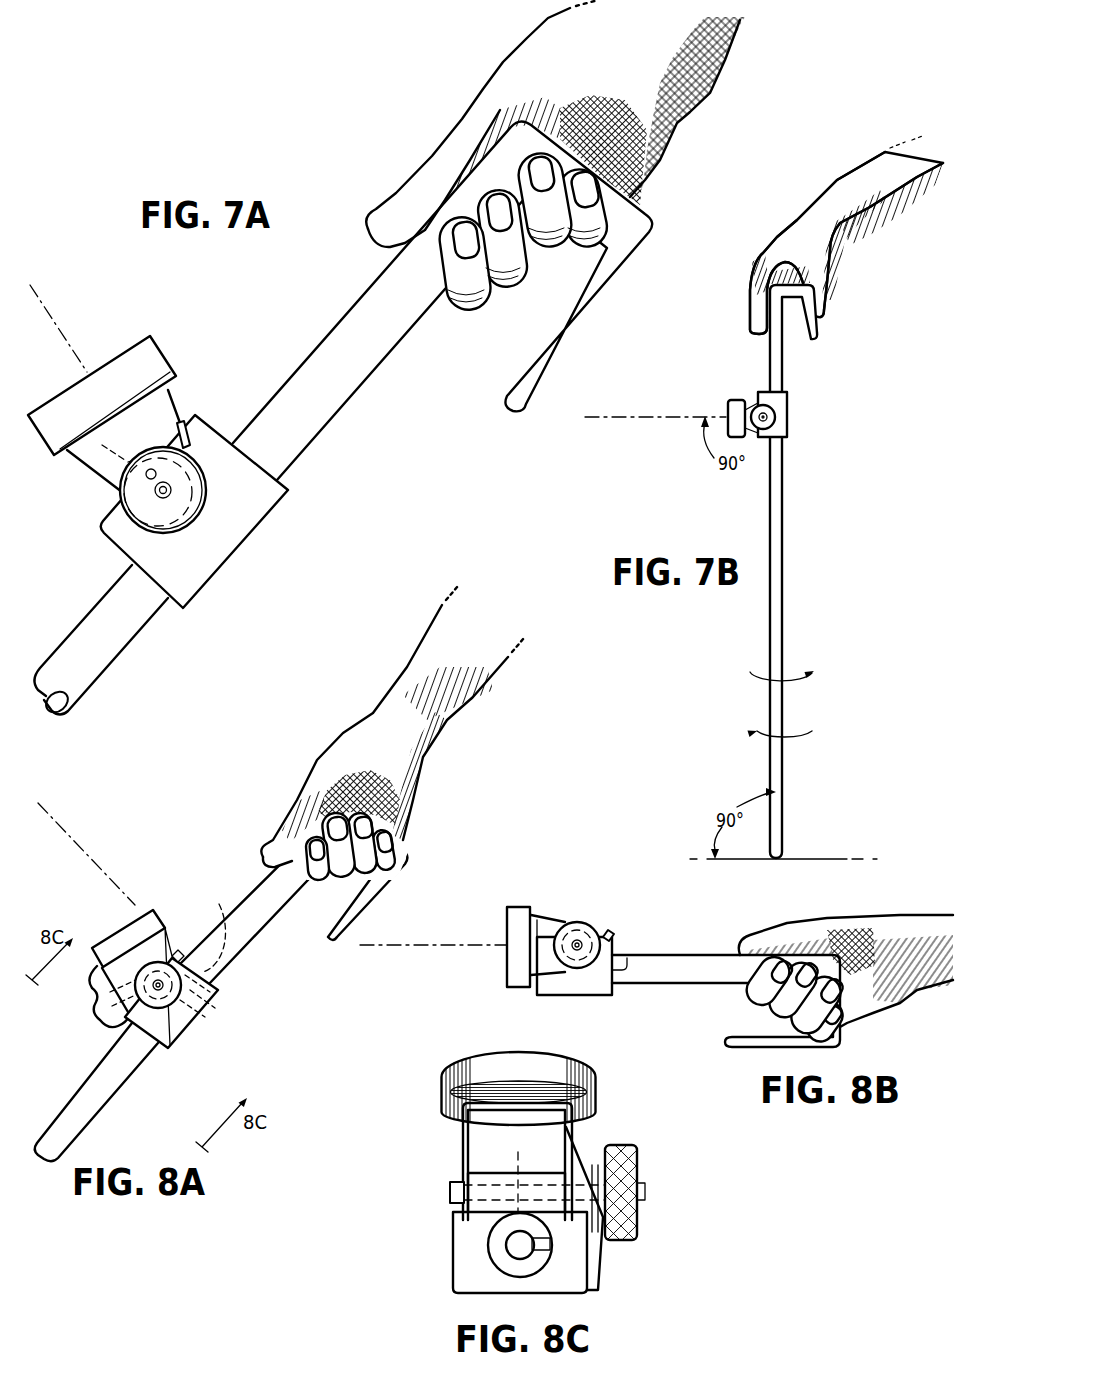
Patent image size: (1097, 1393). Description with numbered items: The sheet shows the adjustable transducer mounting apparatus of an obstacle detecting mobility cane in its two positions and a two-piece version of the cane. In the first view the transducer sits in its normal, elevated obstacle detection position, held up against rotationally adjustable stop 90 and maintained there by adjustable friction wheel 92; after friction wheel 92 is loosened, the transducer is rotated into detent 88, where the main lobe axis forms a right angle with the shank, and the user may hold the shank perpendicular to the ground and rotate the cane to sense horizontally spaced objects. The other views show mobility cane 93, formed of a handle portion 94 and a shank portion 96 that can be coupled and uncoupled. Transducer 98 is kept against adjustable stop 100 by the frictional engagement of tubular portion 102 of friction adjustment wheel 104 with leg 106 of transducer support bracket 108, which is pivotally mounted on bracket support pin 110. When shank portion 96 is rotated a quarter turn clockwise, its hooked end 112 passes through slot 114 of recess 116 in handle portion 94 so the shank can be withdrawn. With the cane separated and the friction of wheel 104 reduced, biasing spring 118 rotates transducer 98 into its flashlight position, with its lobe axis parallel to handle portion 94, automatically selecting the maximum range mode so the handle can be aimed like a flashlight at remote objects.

In FIG. 7A, the detent 88 is at (121, 480).
In FIG. 7B, the detent 88 is at (743, 403).
In FIG. 7A, the rotationally adjustable stop 90 is at (181, 422).
In FIG. 7B, the rotationally adjustable stop 90 is at (759, 401).
In FIG. 7A, the adjustable friction wheel 92 is at (200, 463).
In FIG. 8A, the mobility cane 93 is at (203, 1030).
In FIG. 8A, the handle portion 94 is at (253, 899).
In FIG. 8B, the handle portion 94 is at (681, 962).
In FIG. 8A, the shank portion 96 is at (78, 1100).
In FIG. 8A, the transducer 98 is at (131, 926).
In FIG. 8B, the transducer 98 is at (512, 906).
In FIG. 8C, the transducer 98 is at (455, 1070).
In FIG. 8A, the adjustable stop 100 is at (173, 958).
In FIG. 8B, the adjustable stop 100 is at (608, 931).
In FIG. 8C, the tubular portion 102 is at (580, 1173).
In FIG. 8B, the friction adjustment wheel 104 is at (577, 921).
In FIG. 8C, the friction adjustment wheel 104 is at (636, 1176).
In FIG. 8C, the leg 106 is at (582, 1137).
In FIG. 8C, the transducer support bracket 108 is at (515, 1103).
In FIG. 8C, the bracket support pin 110 is at (466, 1206).
In FIG. 8A, the hooked end 112 is at (213, 988).
In FIG. 8C, the hooked end 112 is at (520, 1167).
In FIG. 8C, the slot 114 is at (551, 1243).
In FIG. 8A, the recess 116 is at (210, 926).
In FIG. 8C, the recess 116 is at (506, 1247).
In FIG. 8A, the biasing spring 118 is at (168, 950).
In FIG. 8C, the biasing spring 118 is at (587, 1140).